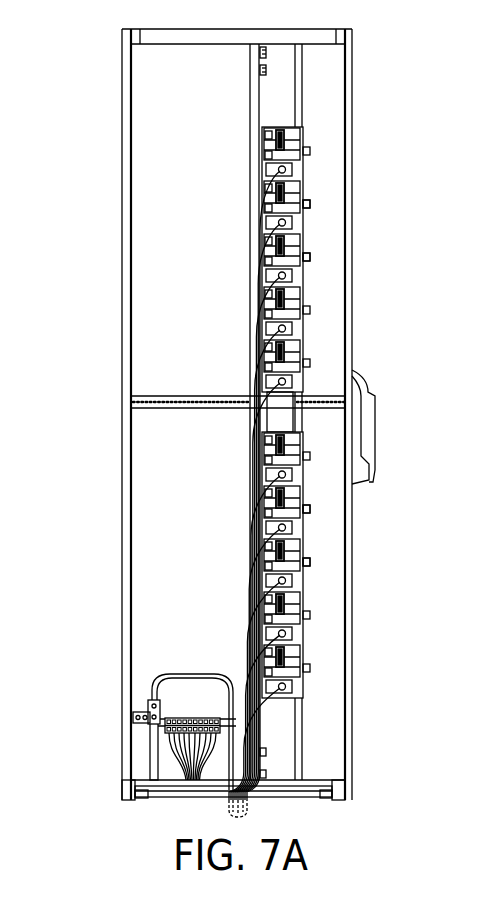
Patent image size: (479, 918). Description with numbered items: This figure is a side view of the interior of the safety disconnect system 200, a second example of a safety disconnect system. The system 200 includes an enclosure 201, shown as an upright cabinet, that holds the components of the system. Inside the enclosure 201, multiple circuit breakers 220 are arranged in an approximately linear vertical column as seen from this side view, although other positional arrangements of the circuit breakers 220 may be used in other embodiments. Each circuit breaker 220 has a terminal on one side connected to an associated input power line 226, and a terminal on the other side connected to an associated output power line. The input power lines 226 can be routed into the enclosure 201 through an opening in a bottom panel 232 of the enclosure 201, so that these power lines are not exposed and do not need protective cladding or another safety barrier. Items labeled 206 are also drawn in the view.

The safety disconnect system 200 is at (204, 414).
The enclosure 201 is at (122, 305).
The circuit breakers 220 is at (306, 128).
The connectors 206 is at (311, 257).
The input power line 226 is at (248, 297).
The bottom panel 232 is at (290, 783).